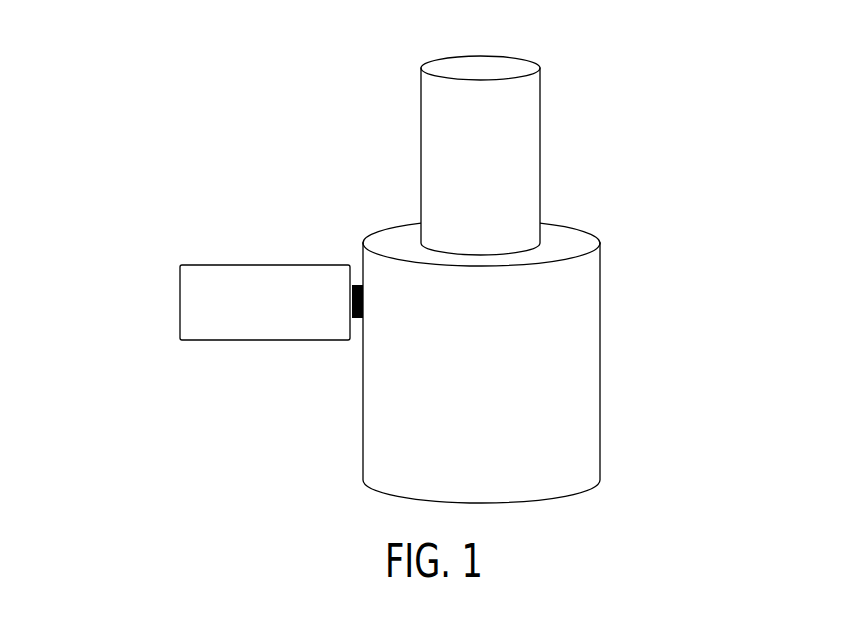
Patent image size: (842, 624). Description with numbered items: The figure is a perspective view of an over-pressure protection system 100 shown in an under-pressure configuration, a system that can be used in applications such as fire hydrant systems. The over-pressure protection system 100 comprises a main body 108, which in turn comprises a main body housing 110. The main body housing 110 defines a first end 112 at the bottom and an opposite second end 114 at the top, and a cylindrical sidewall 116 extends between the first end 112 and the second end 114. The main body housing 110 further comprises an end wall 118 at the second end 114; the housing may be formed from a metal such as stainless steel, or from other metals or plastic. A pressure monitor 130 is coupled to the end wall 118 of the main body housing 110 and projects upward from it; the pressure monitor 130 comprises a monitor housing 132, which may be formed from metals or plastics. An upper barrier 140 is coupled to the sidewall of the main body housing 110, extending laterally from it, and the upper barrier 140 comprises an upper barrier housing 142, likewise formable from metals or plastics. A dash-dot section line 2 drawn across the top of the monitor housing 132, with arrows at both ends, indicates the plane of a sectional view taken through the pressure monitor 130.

The section line 2- 2 is at (300, 69).
The over-pressure protection system 100 is at (125, 183).
The main body 108 is at (531, 361).
The main body housing 110 is at (511, 361).
The first end 112 is at (583, 487).
The second end 114 is at (588, 243).
The cylindrical sidewall 116 is at (578, 305).
The end wall 118 is at (551, 235).
The pressure monitor 130 is at (515, 155).
The monitor housing 132 is at (437, 171).
The upper barrier 140 is at (255, 327).
The upper barrier housing 142 is at (211, 278).